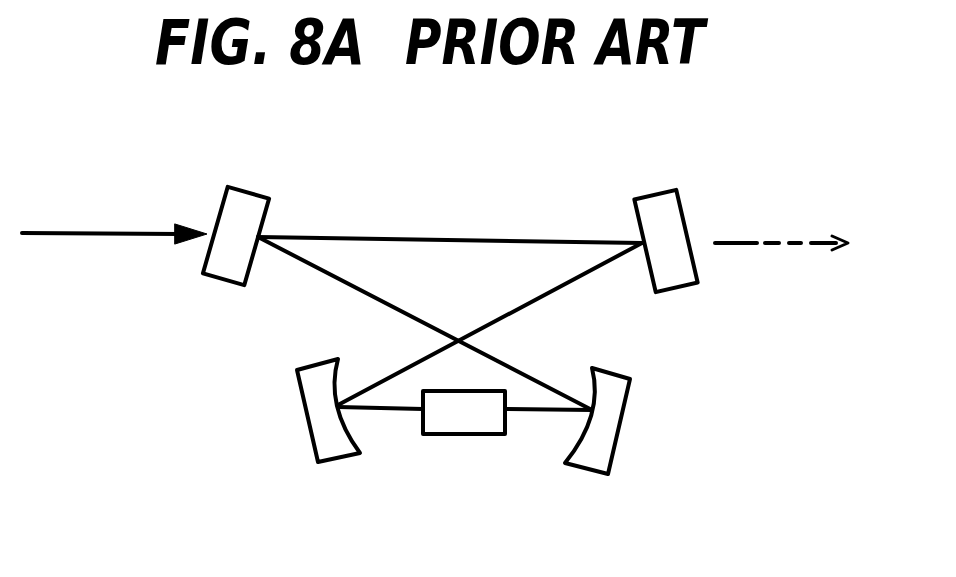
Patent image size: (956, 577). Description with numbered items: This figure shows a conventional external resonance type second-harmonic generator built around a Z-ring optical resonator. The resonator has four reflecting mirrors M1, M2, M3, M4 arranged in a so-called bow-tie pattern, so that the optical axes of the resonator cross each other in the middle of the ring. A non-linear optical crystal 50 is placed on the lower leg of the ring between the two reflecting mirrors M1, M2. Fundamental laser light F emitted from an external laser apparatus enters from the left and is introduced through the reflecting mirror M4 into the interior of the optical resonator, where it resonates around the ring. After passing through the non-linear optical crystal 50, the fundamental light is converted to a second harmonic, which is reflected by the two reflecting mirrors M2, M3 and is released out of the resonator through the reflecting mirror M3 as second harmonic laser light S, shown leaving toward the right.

The fundamental laser light F is at (129, 231).
The reflecting mirror M4 is at (247, 203).
The reflecting mirror M3 is at (655, 210).
The second harmonic laser light S is at (742, 245).
The reflecting mirror M1 is at (322, 433).
The reflecting mirror M2 is at (608, 426).
The non-linear optical crystal 50 is at (477, 422).